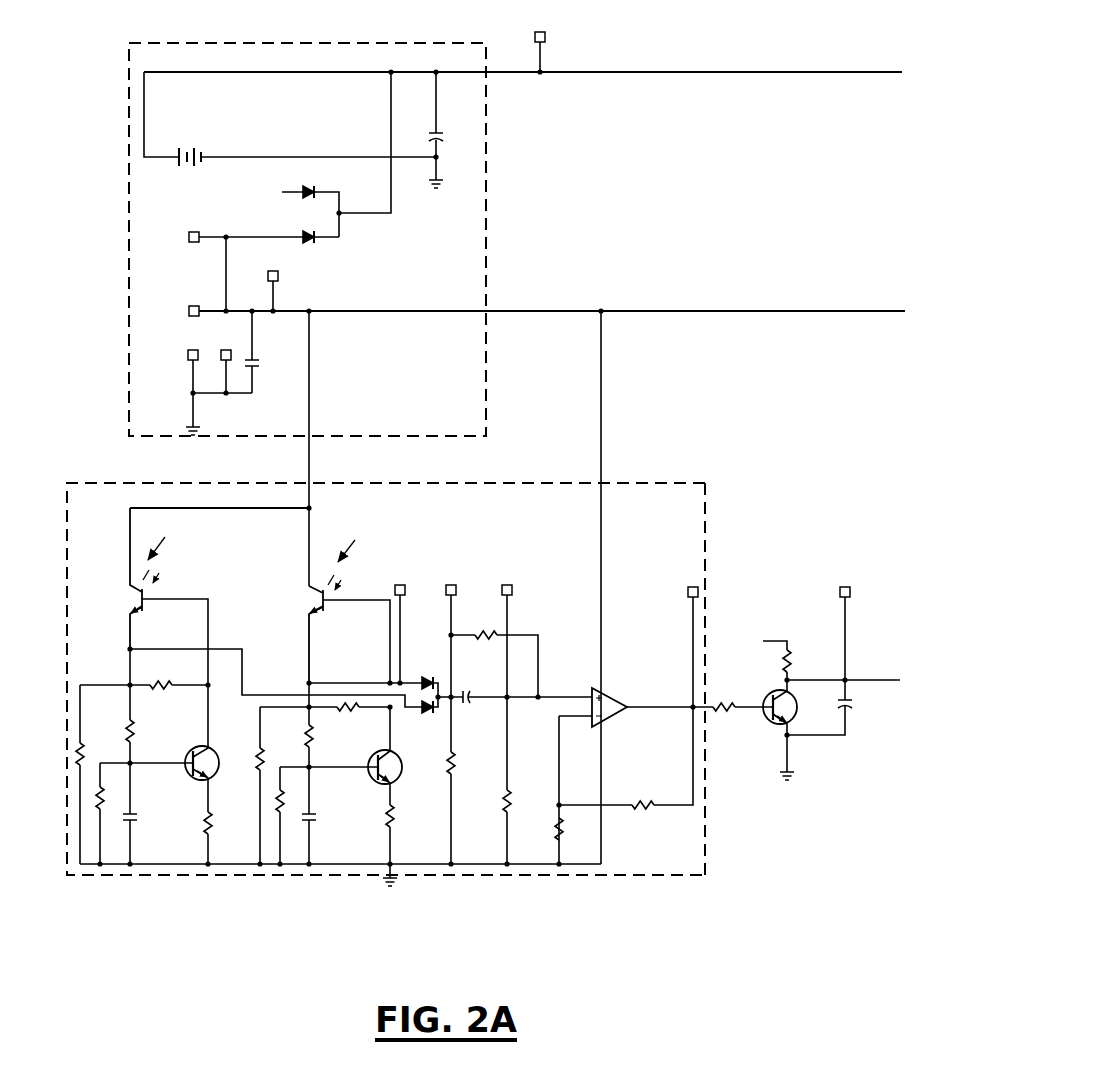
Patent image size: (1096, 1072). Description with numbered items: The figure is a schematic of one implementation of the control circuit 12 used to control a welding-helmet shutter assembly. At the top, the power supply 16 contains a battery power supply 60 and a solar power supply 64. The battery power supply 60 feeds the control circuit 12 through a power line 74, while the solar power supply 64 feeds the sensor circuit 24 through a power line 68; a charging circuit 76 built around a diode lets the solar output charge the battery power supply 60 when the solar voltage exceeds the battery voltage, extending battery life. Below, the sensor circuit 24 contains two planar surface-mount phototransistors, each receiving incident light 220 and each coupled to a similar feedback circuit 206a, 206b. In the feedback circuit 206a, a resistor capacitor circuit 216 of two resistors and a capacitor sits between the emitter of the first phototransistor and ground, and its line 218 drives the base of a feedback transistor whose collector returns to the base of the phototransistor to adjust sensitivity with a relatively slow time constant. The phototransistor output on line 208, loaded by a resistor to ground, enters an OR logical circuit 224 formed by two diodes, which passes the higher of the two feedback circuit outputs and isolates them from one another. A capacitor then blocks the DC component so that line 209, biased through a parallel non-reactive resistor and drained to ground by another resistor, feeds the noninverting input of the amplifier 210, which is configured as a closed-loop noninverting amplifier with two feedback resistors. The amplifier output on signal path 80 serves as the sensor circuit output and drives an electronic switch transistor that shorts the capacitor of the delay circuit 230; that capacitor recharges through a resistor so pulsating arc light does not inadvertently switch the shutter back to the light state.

The control circuit 12 is at (698, 900).
The power supply 16 is at (127, 274).
The sensor circuit 24 is at (639, 481).
The battery power supply 60 is at (156, 173).
The solar power supply 64 is at (130, 338).
The power line 68 is at (497, 311).
The power line 74 is at (660, 72).
The charging circuit 76 is at (402, 229).
The signal path 80 is at (647, 708).
The feedback circuit 206a is at (377, 888).
The feedback circuit 206b is at (124, 883).
The line 208 is at (325, 682).
The line 209 is at (553, 696).
The amplifier 210 is at (630, 735).
The resistor capacitor circuit 216 is at (302, 879).
The line 218 is at (320, 766).
The incident light 220 is at (260, 595).
The OR logical circuit 224 is at (420, 727).
The delay circuit 230 is at (855, 653).